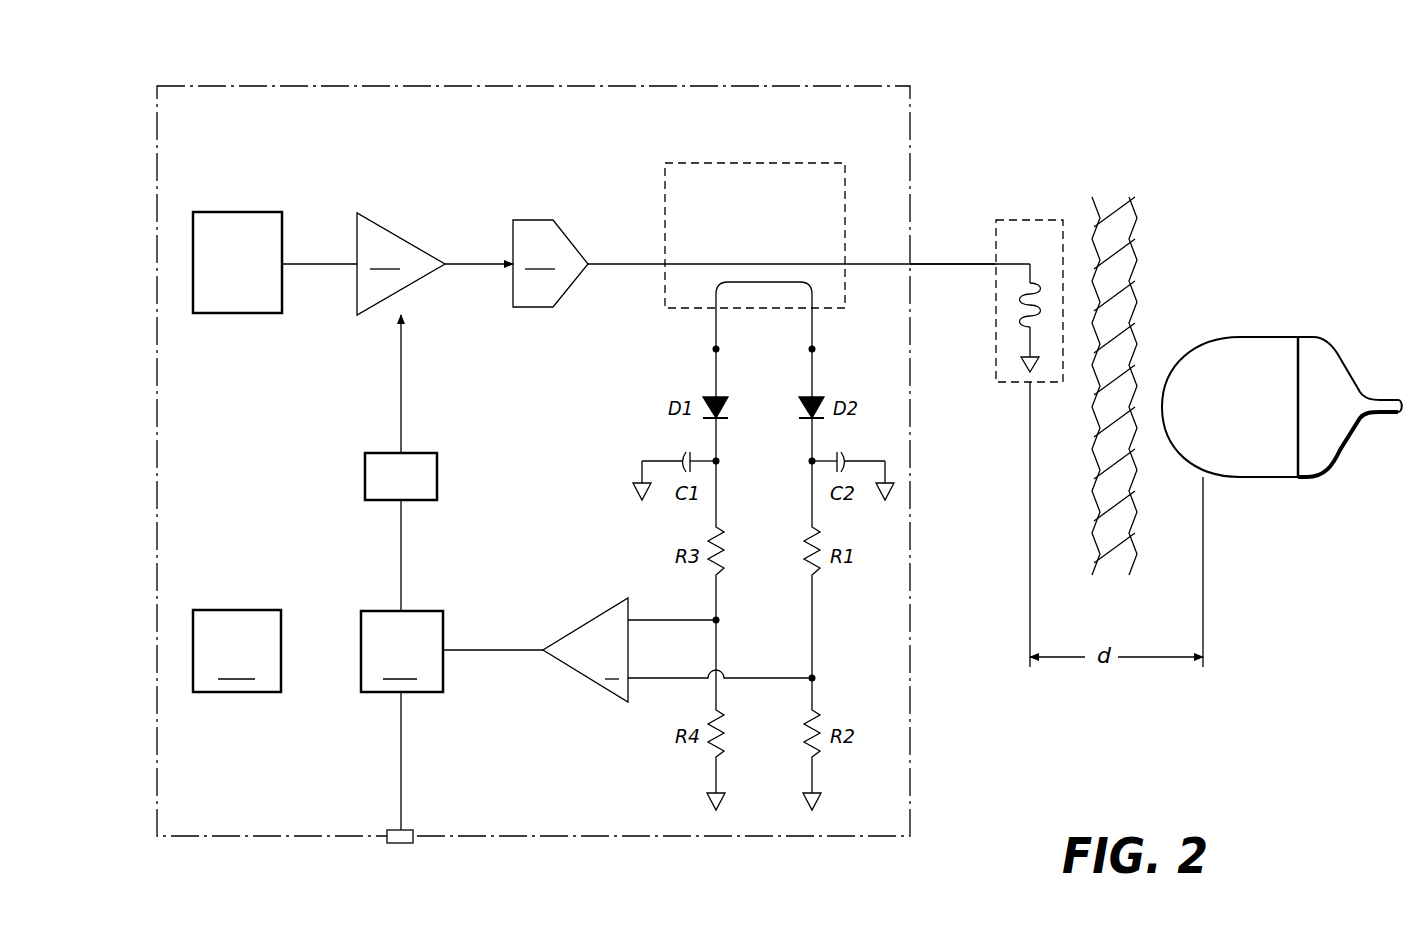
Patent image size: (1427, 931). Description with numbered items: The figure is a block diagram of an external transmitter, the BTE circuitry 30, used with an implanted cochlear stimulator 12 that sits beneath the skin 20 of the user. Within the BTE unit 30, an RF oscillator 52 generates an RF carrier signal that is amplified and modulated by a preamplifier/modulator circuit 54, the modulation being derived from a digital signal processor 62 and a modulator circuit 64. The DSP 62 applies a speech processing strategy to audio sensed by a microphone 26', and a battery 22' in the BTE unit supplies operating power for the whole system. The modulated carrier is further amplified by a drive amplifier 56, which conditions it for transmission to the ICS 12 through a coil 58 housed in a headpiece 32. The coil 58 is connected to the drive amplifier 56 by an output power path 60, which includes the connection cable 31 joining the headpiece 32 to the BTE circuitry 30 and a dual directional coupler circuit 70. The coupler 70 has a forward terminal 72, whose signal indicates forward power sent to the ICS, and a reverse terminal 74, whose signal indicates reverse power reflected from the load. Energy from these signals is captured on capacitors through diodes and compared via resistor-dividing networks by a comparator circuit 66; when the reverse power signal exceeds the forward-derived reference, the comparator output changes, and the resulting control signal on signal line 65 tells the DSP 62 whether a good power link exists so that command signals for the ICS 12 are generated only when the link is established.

The BTE circuitry 30 is at (393, 86).
The RF oscillator 52 is at (245, 313).
The preamplifier/modulator circuit 54 is at (411, 250).
The drive amplifier 56 is at (565, 250).
The output power path 60 is at (638, 264).
The dual directional coupler circuit 70 is at (757, 163).
The forward terminal 72 is at (720, 352).
The reverse terminal 74 is at (810, 349).
The connection cable 31 is at (968, 263).
The headpiece 32 is at (1035, 220).
The coil 58 is at (1024, 298).
The skin 20 is at (1128, 241).
The implanted cochlear stimulator 12 is at (1263, 337).
The modulator circuit 64 is at (437, 475).
The digital signal processor 62 is at (402, 651).
The battery 22' is at (237, 651).
The signal line 65 is at (500, 650).
The comparator circuit 66 is at (593, 680).
The microphone 26' is at (405, 777).